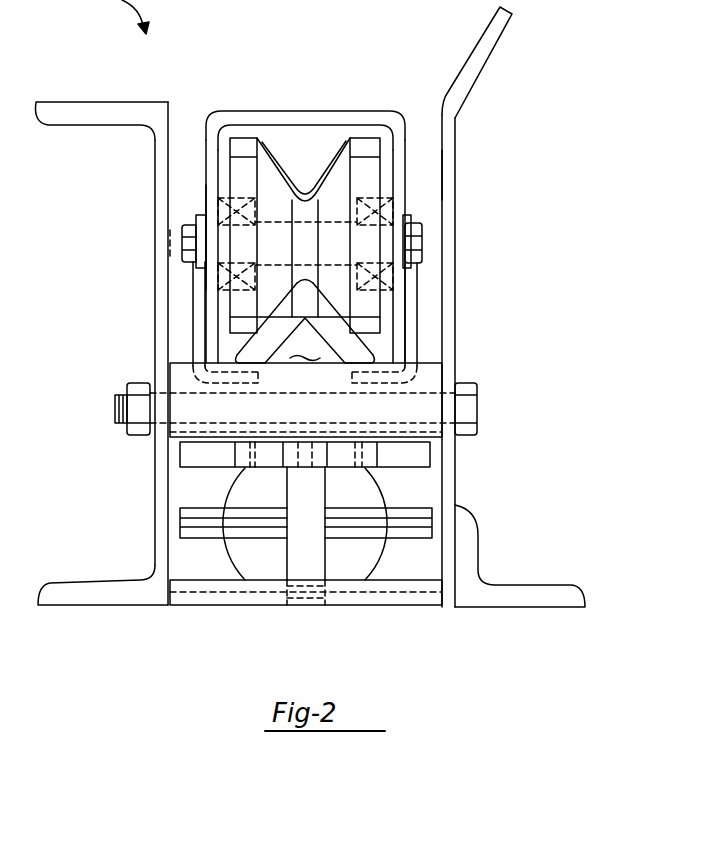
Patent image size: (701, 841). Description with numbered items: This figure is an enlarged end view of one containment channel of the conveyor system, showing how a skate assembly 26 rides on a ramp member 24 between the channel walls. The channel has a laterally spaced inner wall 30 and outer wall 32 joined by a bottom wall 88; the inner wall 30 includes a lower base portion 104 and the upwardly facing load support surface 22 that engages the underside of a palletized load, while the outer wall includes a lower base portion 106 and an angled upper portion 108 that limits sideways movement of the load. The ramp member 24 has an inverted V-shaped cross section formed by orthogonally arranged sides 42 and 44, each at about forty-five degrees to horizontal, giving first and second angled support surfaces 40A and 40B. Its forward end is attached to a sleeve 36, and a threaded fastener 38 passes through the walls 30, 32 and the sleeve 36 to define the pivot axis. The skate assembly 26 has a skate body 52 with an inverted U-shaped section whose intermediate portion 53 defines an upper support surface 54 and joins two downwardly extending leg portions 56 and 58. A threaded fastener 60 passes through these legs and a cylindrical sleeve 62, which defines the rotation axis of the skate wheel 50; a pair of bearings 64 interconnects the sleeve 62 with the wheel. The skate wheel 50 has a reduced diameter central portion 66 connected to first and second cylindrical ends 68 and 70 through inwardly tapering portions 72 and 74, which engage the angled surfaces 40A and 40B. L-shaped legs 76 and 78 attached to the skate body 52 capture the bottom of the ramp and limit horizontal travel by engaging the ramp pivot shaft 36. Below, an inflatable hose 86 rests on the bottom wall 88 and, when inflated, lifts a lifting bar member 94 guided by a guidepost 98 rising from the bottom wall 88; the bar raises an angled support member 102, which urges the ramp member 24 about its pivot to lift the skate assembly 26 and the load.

The load support surface 22 is at (122, 102).
The ramp member 24 is at (362, 345).
The skate assembly 26 is at (322, 100).
The inner wall portion 30 is at (162, 303).
The outer wall portion 32 is at (455, 285).
The sleeve 36 is at (433, 365).
The threaded fastener 38 is at (472, 410).
The first angled support surface 40A is at (240, 318).
The second angled support surface 40B is at (340, 318).
The first side 42 is at (240, 343).
The second side 44 is at (378, 343).
The skate wheel 50 is at (377, 140).
The skate body 52 is at (210, 192).
The intermediate portion 53 is at (269, 118).
The upper support surface 54 is at (351, 113).
The first leg portion 56 is at (210, 192).
The second leg portion 58 is at (335, 208).
The threaded fastener 60 is at (420, 240).
The cylindrical sleeve 62 is at (395, 203).
The bearing 64 is at (172, 262).
The reduced diameter central portion 66 is at (368, 163).
The first cylindrical end 68 is at (243, 155).
The second cylindrical end 70 is at (440, 160).
The first inwardly tapering portion 72 is at (279, 172).
The second inwardly tapering portion 74 is at (322, 304).
The first L-shaped leg 76 is at (190, 330).
The second L-shaped leg 78 is at (412, 353).
The inflatable hose 86 is at (398, 488).
The bottom wall 88 is at (190, 572).
The lifting bar member 94 is at (413, 452).
The guidepost 98 is at (297, 492).
The angled support member 102 is at (311, 345).
The lower base portion 104 is at (102, 595).
The lower base portion 106 is at (485, 590).
The angled upper portion 108 is at (487, 53).